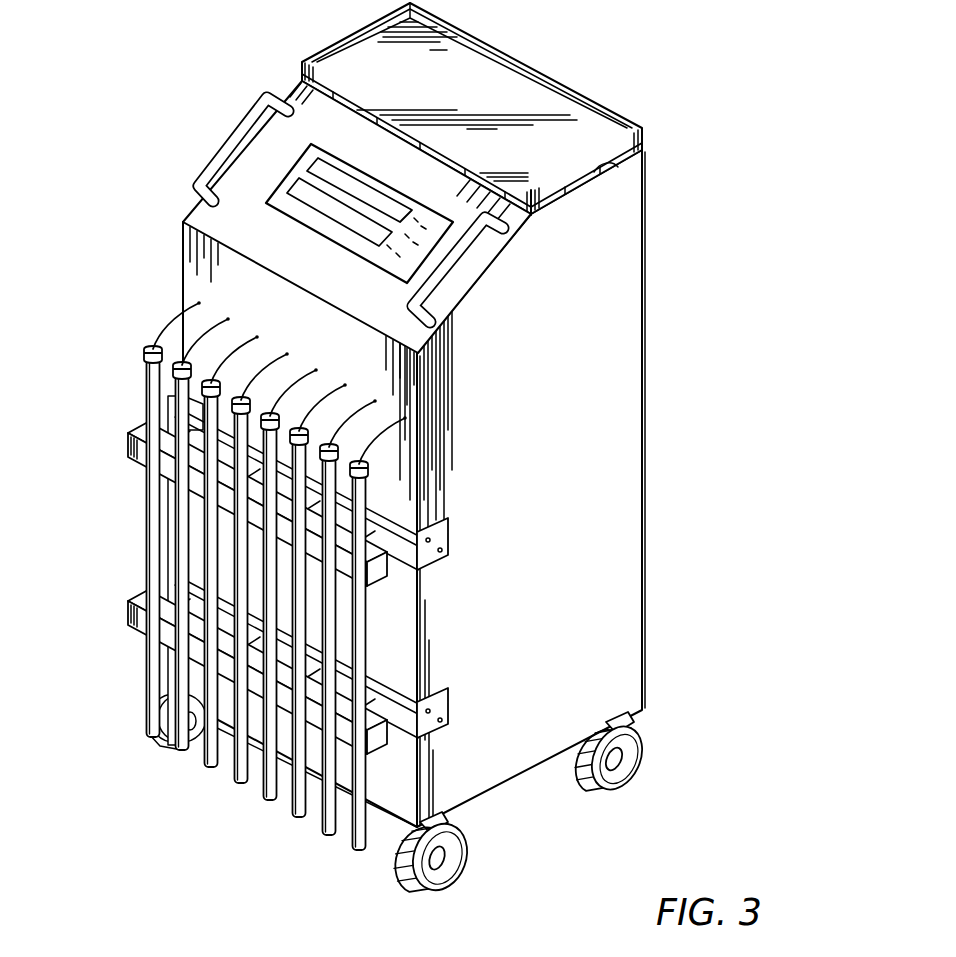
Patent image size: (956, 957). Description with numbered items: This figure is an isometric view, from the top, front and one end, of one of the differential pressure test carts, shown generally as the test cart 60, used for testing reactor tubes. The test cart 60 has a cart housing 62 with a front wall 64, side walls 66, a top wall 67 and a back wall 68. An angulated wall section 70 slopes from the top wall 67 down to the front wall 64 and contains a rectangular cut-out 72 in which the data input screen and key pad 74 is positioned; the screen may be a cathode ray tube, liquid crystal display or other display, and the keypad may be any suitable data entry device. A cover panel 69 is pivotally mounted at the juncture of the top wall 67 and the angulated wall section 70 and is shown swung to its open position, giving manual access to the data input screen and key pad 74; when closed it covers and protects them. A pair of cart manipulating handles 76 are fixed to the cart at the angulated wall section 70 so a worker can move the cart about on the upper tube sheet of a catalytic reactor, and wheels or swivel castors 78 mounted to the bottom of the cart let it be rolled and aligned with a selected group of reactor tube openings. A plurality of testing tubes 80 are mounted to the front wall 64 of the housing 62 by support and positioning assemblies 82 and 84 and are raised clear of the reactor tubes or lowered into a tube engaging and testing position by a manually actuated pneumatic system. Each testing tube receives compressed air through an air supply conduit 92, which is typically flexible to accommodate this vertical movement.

The test cart 60 is at (650, 101).
The cart housing 62 is at (272, 258).
The front wall 64 is at (198, 305).
The side walls 66 is at (645, 440).
The top wall 67 is at (630, 158).
The back wall 68 is at (645, 252).
The cover panel 69 is at (552, 110).
The angulated wall section 70 is at (250, 263).
The rectangular cut-out 72 is at (287, 175).
The data input screen and key pad 74 is at (273, 207).
The cart manipulating handles 76 is at (252, 108).
The wheels or swivel castors 78 is at (622, 774).
The testing tubes 80 is at (183, 543).
The support and positioning assembly 82 is at (468, 542).
The support and positioning assembly 84 is at (470, 686).
The air supply conduit 92 is at (148, 370).